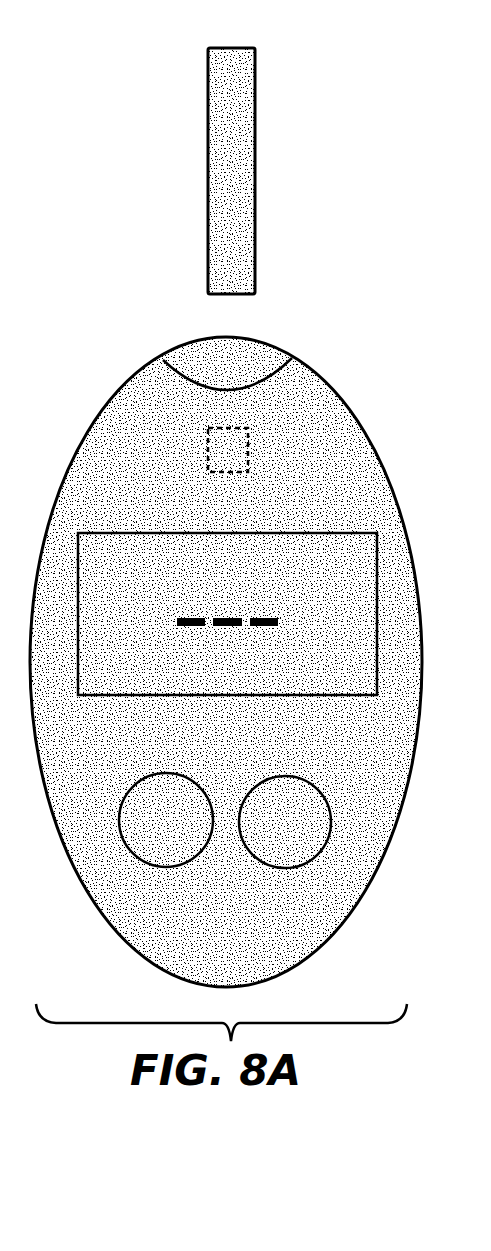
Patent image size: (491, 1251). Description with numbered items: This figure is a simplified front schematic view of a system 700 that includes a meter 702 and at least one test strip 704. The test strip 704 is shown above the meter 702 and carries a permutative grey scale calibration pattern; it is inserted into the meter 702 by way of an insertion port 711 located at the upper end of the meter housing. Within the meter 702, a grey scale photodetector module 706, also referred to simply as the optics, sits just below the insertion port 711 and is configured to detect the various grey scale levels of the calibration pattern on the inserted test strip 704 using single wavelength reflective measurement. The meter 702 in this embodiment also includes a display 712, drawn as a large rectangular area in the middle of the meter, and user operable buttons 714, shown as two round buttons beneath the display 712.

The system 700 is at (136, 59).
The test strip 704 is at (204, 239).
The meter 702 is at (145, 360).
The insertion port 711 is at (245, 378).
The grey scale photodetector module 706 is at (207, 445).
The display 712 is at (128, 540).
The user operable buttons 714 is at (268, 845).